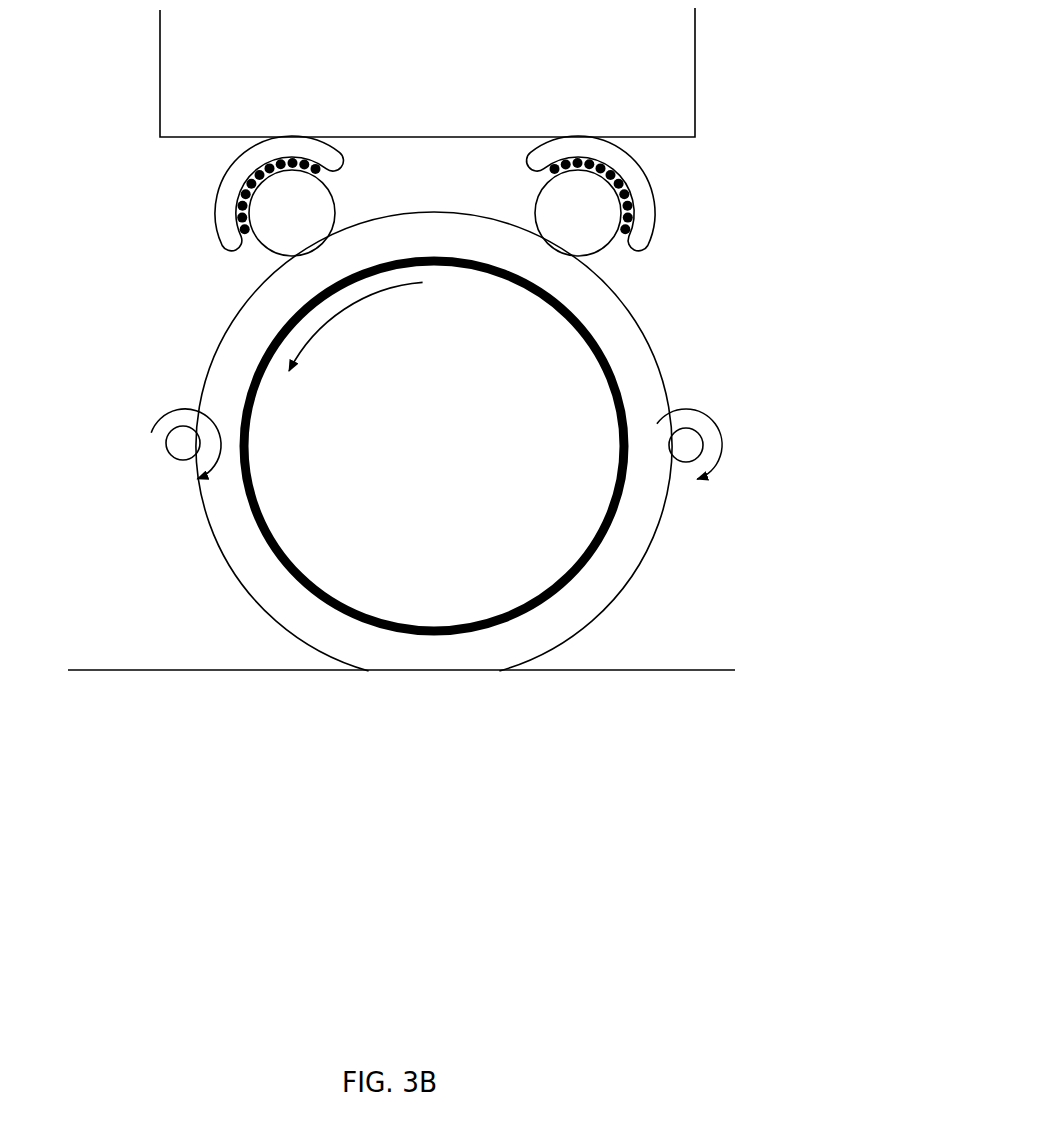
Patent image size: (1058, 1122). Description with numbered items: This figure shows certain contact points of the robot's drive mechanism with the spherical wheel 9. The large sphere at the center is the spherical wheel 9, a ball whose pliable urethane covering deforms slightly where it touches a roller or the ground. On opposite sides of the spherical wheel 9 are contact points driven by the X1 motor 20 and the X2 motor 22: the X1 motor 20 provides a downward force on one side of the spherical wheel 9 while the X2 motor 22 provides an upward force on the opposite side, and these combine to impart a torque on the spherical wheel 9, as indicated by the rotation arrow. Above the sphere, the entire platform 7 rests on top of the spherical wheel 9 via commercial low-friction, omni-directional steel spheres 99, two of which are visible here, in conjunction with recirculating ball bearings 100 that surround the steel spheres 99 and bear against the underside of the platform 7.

The platform 7 is at (637, 35).
The spherical wheel 9 is at (614, 555).
The omni-directional steel spheres 99 is at (547, 202).
The recirculating ball bearings 100 is at (237, 169).
The X1 motor 20 is at (175, 446).
The X2 motor 22 is at (700, 442).